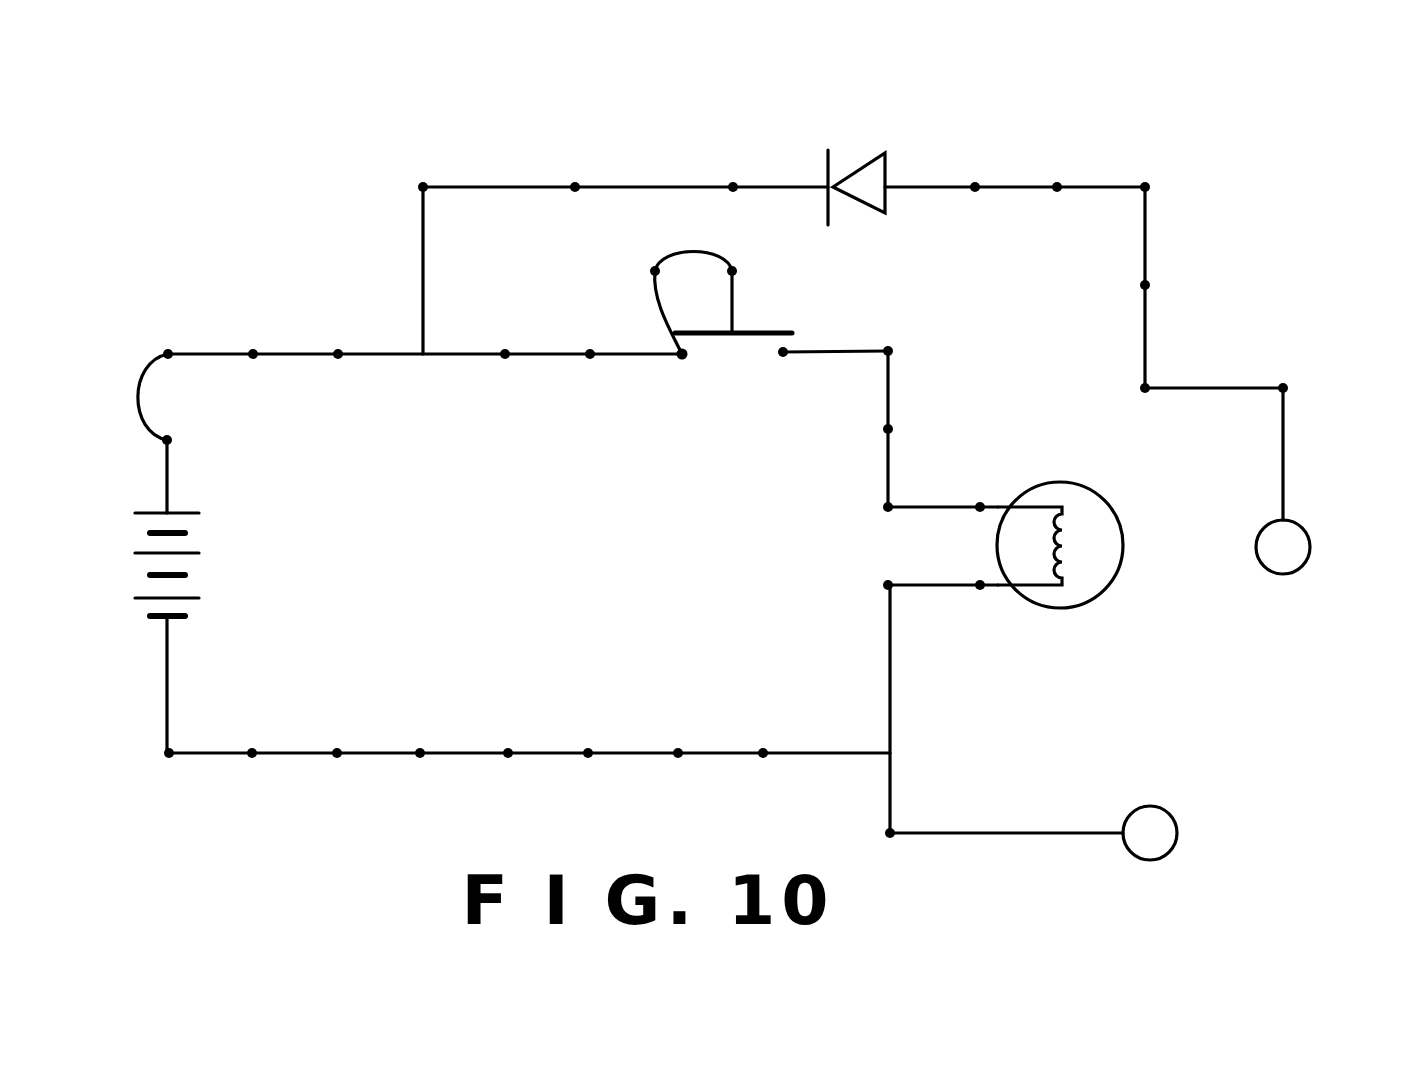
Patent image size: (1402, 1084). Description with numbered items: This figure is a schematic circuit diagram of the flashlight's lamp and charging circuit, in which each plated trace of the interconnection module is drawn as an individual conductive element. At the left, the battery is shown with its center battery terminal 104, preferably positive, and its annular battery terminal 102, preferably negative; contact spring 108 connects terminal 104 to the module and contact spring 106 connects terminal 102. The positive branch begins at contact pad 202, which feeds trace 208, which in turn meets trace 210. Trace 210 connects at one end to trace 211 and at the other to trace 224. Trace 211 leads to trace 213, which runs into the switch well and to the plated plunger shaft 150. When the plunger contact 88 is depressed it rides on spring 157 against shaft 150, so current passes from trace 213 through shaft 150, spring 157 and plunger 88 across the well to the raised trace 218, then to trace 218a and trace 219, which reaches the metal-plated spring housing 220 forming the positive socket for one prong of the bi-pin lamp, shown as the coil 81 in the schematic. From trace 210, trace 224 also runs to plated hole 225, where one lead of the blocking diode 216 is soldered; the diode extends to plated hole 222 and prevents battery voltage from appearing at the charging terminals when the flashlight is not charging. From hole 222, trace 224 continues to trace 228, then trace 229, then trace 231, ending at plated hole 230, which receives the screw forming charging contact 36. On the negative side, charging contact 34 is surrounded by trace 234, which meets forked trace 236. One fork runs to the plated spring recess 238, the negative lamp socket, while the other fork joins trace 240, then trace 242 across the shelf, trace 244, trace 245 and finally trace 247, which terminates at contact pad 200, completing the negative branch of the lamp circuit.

The charging contact 34 is at (1172, 818).
The charging contact 36 is at (1306, 530).
The relay coil 81 is at (1124, 552).
The plunger contact 88 is at (738, 299).
The annular battery terminal 102 is at (160, 668).
The center battery terminal 104 is at (160, 472).
The contact spring 106 is at (216, 760).
The contact spring 108 is at (138, 388).
The plunger shaft 150 is at (650, 308).
The spring 157 is at (682, 250).
The contact pad 200 is at (300, 746).
The contact pad 202 is at (217, 347).
The trace 208 is at (300, 347).
The trace 210 is at (380, 347).
The trace 211 is at (534, 361).
The trace 213 is at (633, 361).
The blocking diode 216 is at (858, 163).
The trace 218 is at (820, 345).
The trace 218a is at (888, 384).
The trace 219 is at (882, 455).
The spring housing 220 is at (940, 498).
The plated hole 222 is at (1012, 180).
The trace 224 is at (497, 180).
The plated hole 225 is at (667, 180).
The trace 228 is at (1152, 238).
The trace 229 is at (1152, 319).
The plated hole 230 is at (1290, 445).
The trace 231 is at (1233, 382).
The trace 234 is at (990, 826).
The forked trace 236 is at (884, 668).
The spring recess 238 is at (943, 592).
The trace 240 is at (727, 760).
The trace 242 is at (638, 746).
The trace 244 is at (551, 760).
The trace 245 is at (466, 746).
The trace 247 is at (380, 760).